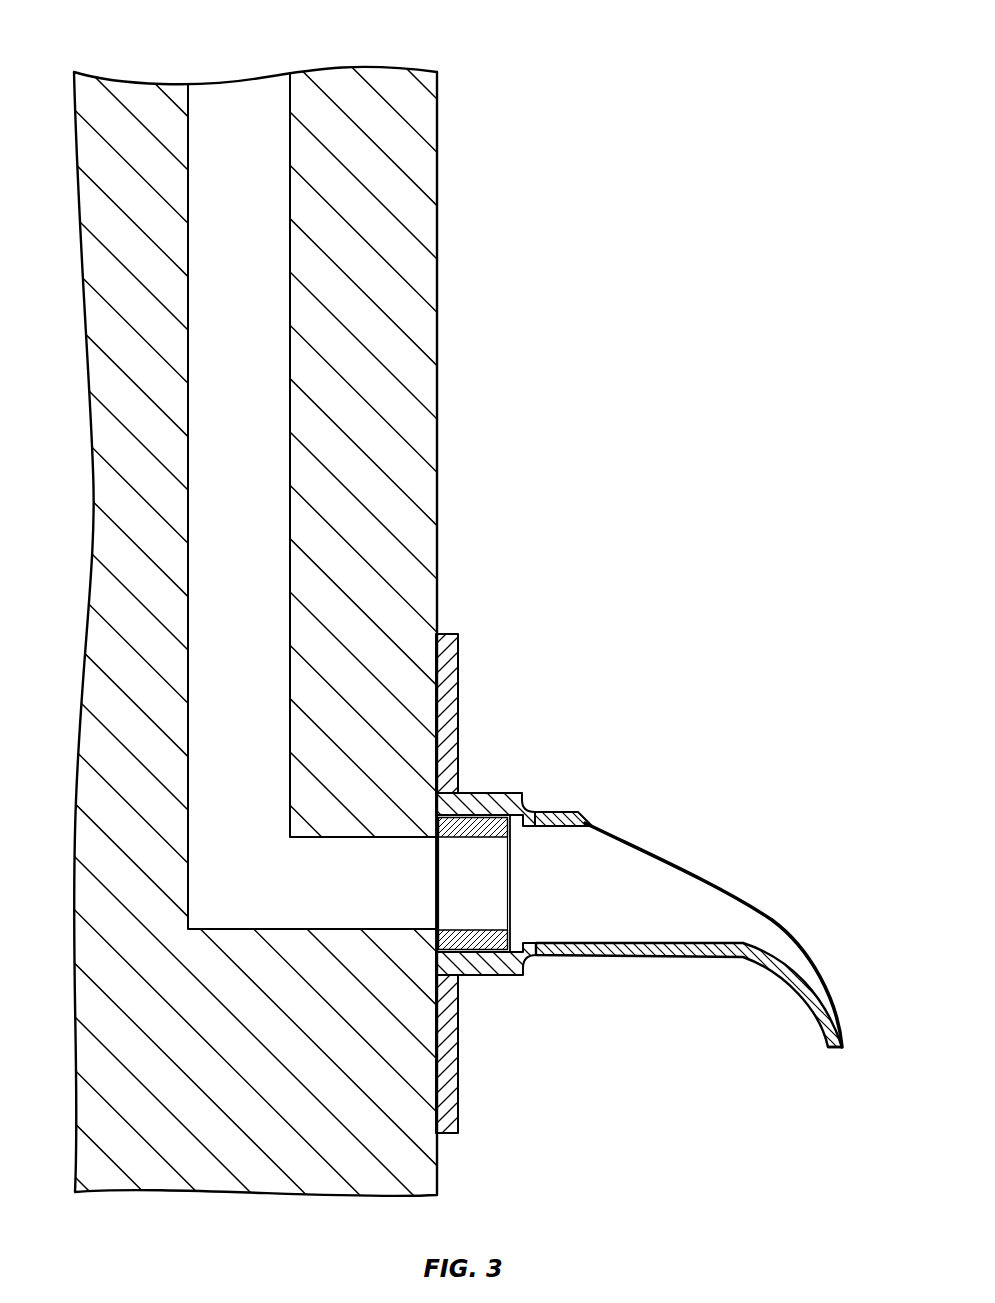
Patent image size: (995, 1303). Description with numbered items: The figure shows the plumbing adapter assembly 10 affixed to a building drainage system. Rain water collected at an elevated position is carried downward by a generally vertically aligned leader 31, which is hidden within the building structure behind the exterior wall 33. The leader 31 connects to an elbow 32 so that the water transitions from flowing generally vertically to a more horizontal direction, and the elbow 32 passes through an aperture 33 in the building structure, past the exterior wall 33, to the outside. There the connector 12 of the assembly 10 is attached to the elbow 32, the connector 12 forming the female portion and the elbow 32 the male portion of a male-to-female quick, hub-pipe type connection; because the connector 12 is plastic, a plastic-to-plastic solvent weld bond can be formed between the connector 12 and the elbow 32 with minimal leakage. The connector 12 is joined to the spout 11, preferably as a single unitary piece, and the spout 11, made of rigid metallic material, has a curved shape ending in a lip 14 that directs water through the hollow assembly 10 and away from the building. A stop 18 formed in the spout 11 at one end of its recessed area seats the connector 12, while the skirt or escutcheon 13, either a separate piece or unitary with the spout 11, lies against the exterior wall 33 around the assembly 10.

The plumbing adapter assembly 10 is at (666, 883).
The spout 11 is at (707, 917).
The connector 12 is at (487, 817).
The escutcheon 13 is at (458, 682).
The lip 14 is at (823, 990).
The stop 18 is at (530, 812).
The leader 31 is at (248, 108).
The elbow 32 is at (497, 883).
The exterior wall 33 is at (437, 300).